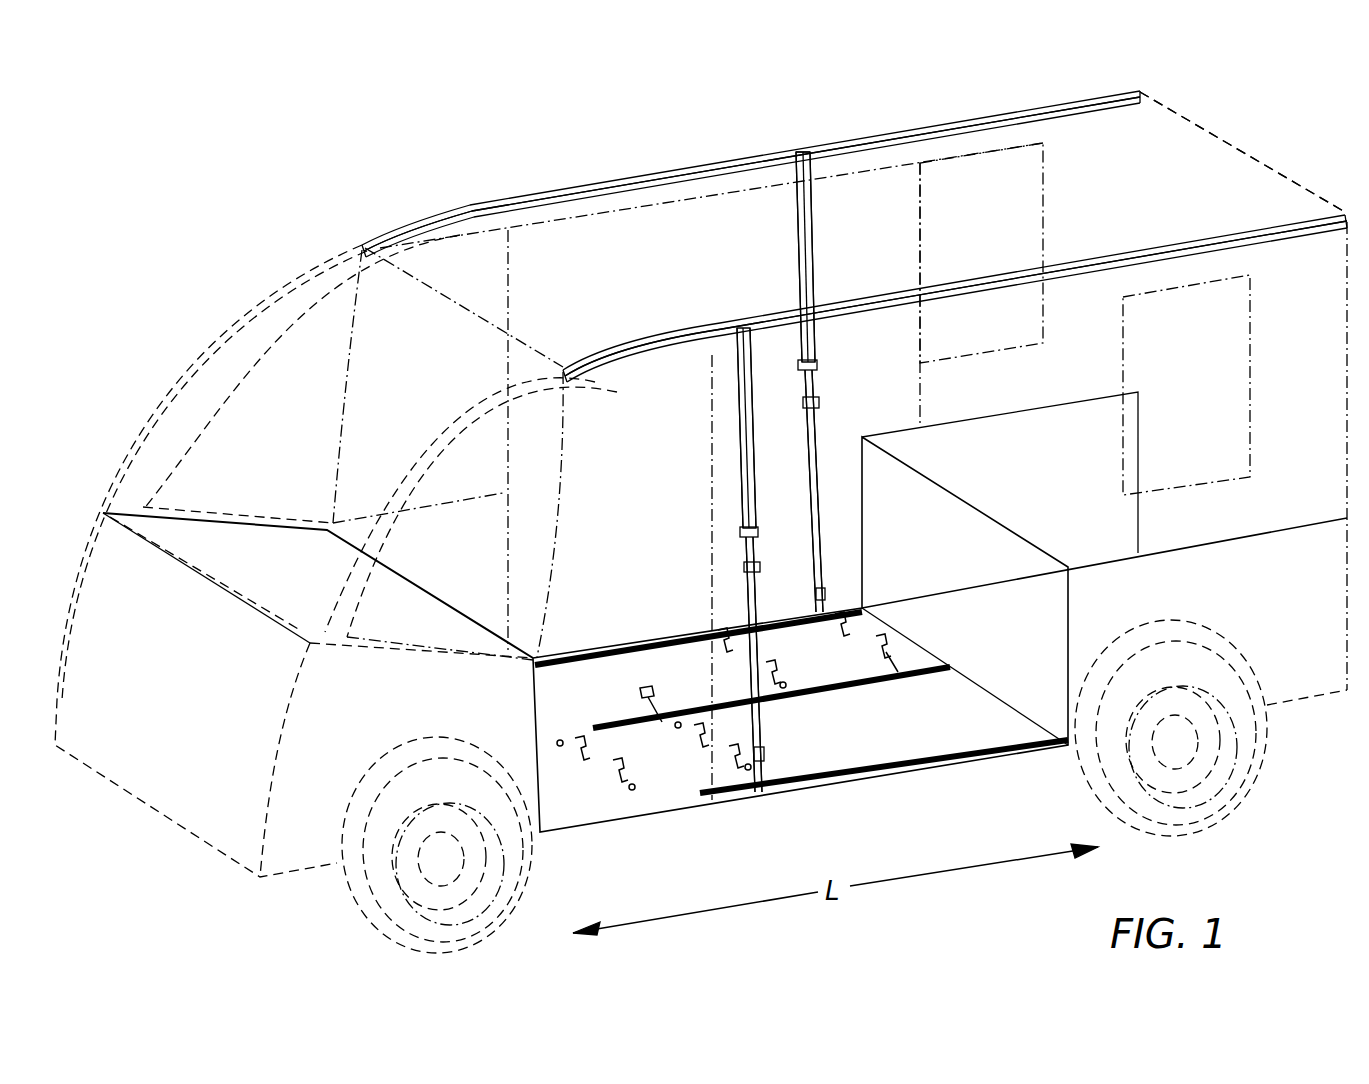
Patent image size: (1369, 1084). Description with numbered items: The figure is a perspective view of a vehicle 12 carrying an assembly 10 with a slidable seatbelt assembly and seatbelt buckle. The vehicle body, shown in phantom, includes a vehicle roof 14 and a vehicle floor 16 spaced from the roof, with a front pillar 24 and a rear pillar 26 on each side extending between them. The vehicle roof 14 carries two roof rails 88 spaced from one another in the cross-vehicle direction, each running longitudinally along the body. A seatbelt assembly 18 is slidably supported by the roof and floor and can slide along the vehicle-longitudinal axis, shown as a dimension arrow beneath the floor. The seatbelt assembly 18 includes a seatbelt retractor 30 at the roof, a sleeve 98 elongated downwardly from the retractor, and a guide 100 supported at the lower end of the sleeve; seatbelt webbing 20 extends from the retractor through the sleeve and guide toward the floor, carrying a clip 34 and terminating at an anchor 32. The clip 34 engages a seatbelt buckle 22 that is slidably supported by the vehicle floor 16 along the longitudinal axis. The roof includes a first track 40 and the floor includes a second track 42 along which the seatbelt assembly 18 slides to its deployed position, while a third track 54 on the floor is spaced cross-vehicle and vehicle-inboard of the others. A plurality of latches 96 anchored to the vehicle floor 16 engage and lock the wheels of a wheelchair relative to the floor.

The assembly 10 is at (410, 168).
The vehicle 12 is at (1238, 97).
The vehicle roof 14 is at (1252, 158).
The vehicle floor 16 is at (583, 788).
The seatbelt assembly 18 is at (790, 236).
The seatbelt webbing 20 is at (823, 520).
The seatbelt buckle 22 is at (888, 638).
The front pillar 24 is at (340, 405).
The rear pillar 26 is at (920, 240).
The seatbelt retractor 30 is at (802, 148).
The anchor 32 is at (766, 753).
The clip 34 is at (819, 403).
The first track 40 is at (975, 127).
The second track 42 is at (616, 652).
The third track 54 is at (862, 690).
The roof rails 88 is at (570, 209).
The latches 96 is at (770, 660).
The sleeve 98 is at (812, 240).
The guide 100 is at (817, 365).